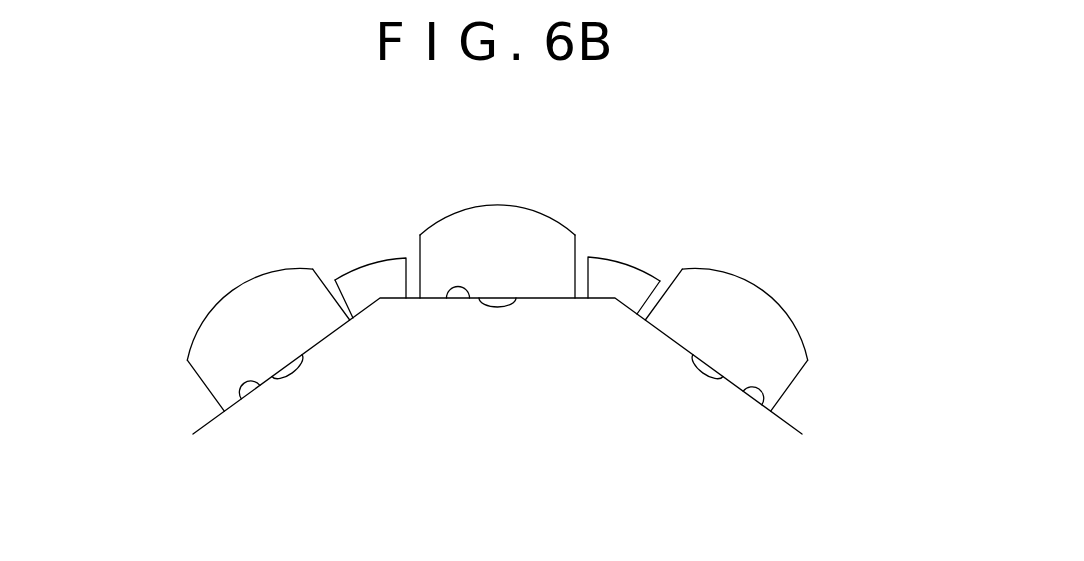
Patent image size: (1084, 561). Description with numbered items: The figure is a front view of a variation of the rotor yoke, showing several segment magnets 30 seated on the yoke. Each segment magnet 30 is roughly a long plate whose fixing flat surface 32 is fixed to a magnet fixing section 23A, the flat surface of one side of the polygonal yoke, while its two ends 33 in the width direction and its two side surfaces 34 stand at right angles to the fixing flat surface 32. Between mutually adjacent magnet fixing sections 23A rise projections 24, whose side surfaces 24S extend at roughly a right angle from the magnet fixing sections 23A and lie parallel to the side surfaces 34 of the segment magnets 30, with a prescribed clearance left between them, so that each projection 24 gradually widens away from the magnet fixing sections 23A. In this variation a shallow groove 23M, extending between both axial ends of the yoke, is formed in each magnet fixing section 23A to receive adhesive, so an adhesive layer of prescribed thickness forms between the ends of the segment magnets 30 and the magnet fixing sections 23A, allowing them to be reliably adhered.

The magnet fixing section 23A is at (240, 403).
The shallow groove 23M is at (285, 383).
The projection 24 is at (501, 226).
The side surface of projection 24S is at (344, 294).
The segment magnet 30 is at (497, 253).
The fixing flat surface 32 is at (328, 338).
The end in width direction 33 is at (460, 247).
The side surface of segment magnet 34 is at (189, 368).